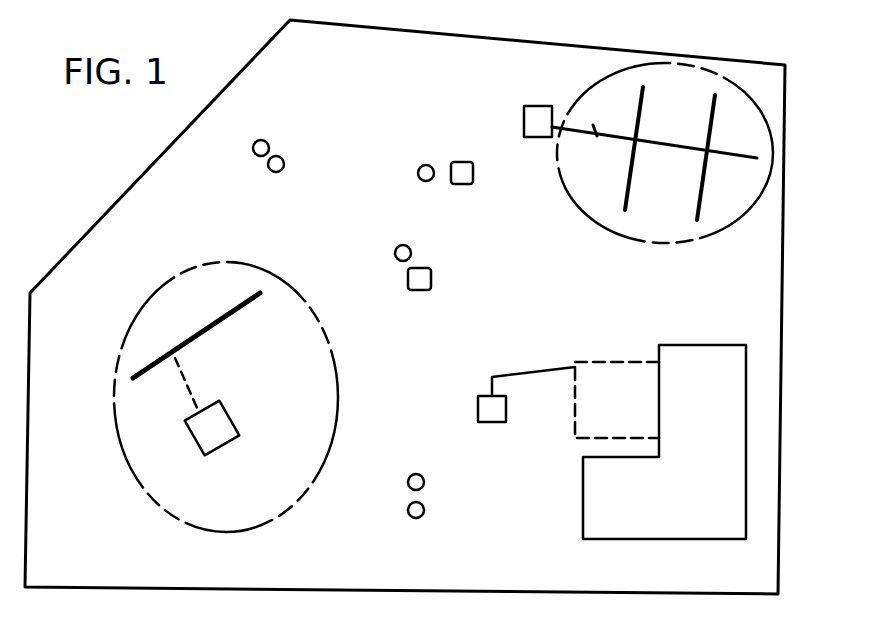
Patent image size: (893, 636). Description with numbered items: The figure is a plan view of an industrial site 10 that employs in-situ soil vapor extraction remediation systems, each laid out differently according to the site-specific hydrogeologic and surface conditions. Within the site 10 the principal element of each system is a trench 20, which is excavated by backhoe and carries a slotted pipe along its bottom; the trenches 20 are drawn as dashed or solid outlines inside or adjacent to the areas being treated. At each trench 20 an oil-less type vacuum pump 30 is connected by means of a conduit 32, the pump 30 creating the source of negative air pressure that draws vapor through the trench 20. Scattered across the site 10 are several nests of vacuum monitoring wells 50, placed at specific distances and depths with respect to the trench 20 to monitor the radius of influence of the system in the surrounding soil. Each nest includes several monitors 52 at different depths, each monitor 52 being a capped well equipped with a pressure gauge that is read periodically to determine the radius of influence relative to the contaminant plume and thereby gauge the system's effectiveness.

The industrial site 10 is at (120, 183).
The trench 20 is at (223, 322).
The vacuum pump 30 is at (240, 432).
The conduit 32 is at (188, 378).
The vacuum monitoring wells 50 is at (276, 130).
The monitor 52 is at (425, 478).